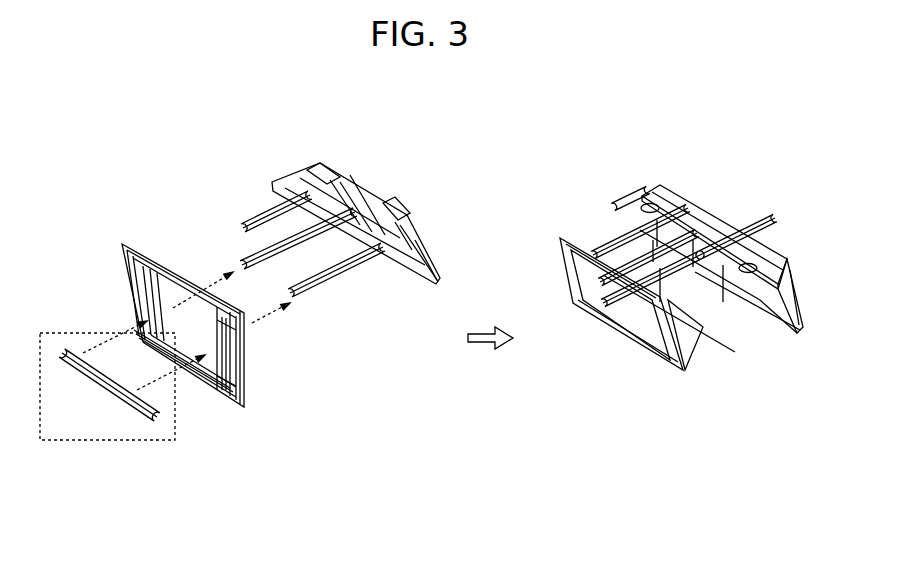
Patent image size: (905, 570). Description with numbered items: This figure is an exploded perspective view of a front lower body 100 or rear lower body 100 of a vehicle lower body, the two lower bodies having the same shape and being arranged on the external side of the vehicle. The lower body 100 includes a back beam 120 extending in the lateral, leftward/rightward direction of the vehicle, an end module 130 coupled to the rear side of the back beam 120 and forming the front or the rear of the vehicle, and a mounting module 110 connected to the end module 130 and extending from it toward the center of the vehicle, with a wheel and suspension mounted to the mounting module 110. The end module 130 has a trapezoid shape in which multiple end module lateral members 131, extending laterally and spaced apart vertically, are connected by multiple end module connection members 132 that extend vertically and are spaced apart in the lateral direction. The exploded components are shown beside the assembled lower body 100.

The front lower body 100 is at (660, 374).
The mounting module 110 is at (367, 177).
The back beam 120 is at (113, 403).
The end module 130 is at (229, 375).
The end module lateral member 131 is at (197, 388).
The end module connection member 132 is at (225, 316).